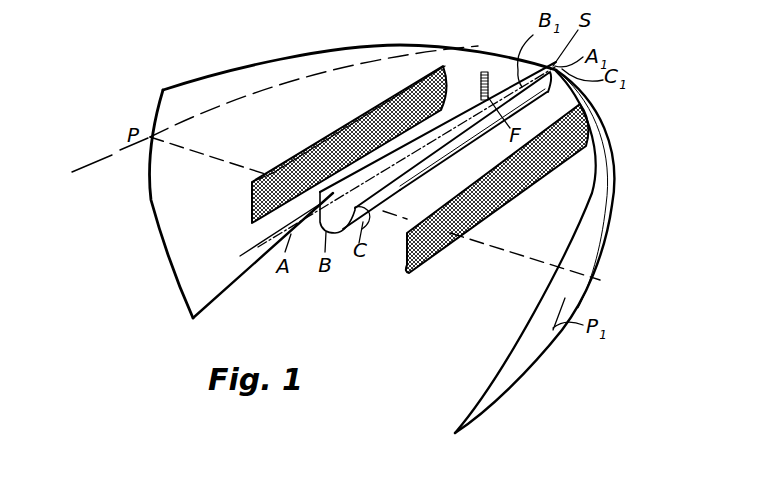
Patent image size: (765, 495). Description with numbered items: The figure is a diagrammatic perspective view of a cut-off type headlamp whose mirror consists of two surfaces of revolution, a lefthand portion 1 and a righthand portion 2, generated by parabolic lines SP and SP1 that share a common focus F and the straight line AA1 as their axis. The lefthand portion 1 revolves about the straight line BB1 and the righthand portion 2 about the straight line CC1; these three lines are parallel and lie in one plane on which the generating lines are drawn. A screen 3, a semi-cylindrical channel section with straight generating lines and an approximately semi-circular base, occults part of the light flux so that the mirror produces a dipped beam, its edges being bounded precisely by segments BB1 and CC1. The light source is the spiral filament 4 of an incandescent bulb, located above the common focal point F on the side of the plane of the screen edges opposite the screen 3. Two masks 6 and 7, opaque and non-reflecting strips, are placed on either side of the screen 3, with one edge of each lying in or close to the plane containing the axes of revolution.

The lefthand portion of the mirror 1 is at (178, 277).
The righthand portion of the mirror 2 is at (583, 273).
The screen 3 is at (422, 176).
The spiral filament 4 is at (487, 72).
The mask 6 is at (252, 200).
The mask 7 is at (419, 268).